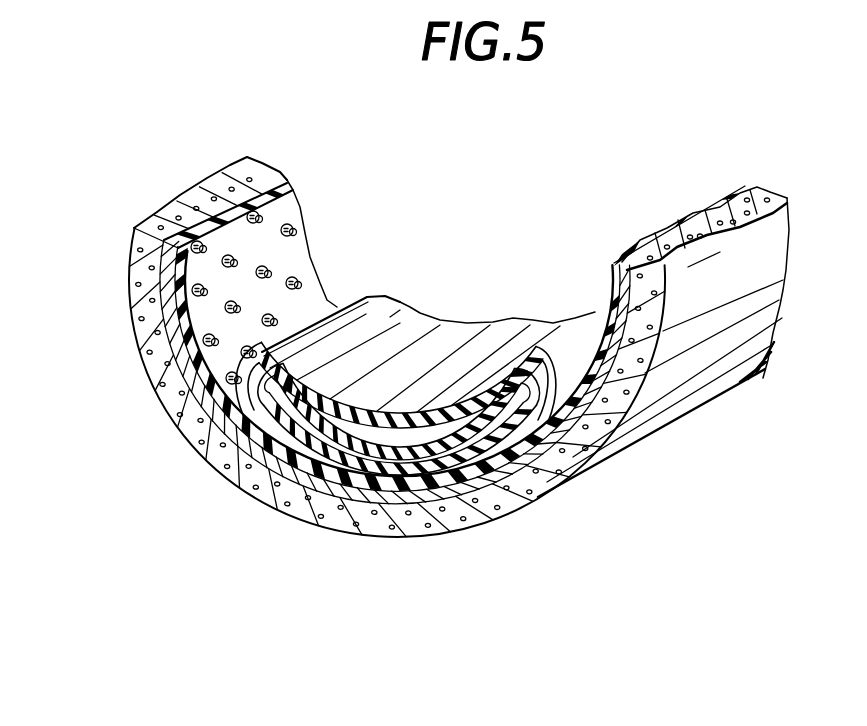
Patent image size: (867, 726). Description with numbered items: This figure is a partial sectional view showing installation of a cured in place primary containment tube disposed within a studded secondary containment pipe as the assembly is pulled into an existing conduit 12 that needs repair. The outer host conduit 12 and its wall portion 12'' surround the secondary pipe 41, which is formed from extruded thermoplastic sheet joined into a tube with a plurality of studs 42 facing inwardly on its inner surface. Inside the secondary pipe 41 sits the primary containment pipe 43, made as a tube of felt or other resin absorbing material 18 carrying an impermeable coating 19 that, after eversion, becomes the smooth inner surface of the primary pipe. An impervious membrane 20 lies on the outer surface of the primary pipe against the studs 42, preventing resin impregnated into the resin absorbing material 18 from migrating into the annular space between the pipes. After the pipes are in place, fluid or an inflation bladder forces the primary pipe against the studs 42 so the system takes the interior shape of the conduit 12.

The existing conduit 12 is at (663, 350).
The outer layer of duct wall 12'' is at (397, 377).
The resin absorbing material 18 is at (356, 398).
The impermeable coating 19 is at (340, 456).
The impervious membrane 20 is at (216, 421).
The secondary pipe 41 is at (168, 352).
The studs 42 is at (262, 213).
The folded and formed primary containment pipe 43 is at (463, 317).